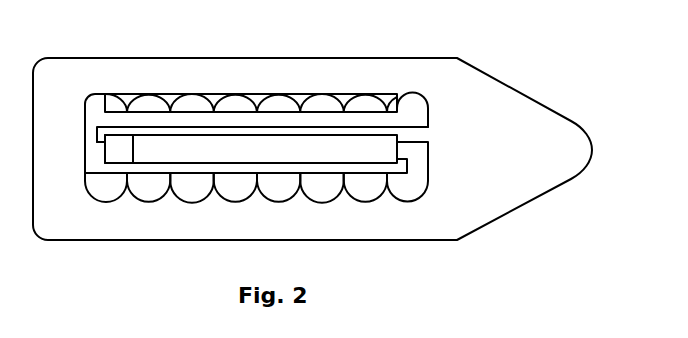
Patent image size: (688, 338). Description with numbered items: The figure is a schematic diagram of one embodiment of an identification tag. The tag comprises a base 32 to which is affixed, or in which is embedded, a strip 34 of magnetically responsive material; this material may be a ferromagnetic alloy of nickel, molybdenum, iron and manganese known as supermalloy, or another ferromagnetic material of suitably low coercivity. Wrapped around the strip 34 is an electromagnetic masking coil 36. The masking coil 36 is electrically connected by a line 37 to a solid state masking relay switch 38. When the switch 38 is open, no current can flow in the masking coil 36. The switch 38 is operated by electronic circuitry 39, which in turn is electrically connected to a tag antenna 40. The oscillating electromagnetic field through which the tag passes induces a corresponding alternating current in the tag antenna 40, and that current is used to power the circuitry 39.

The base 32 is at (489, 76).
The strip of magnetically responsive material 34 is at (213, 100).
The electromagnetic masking coil 36 is at (103, 96).
The line 37 is at (85, 147).
The solid state masking relay switch 38 is at (110, 152).
The electronic circuitry 39 is at (264, 158).
The tag antenna 40 is at (361, 203).